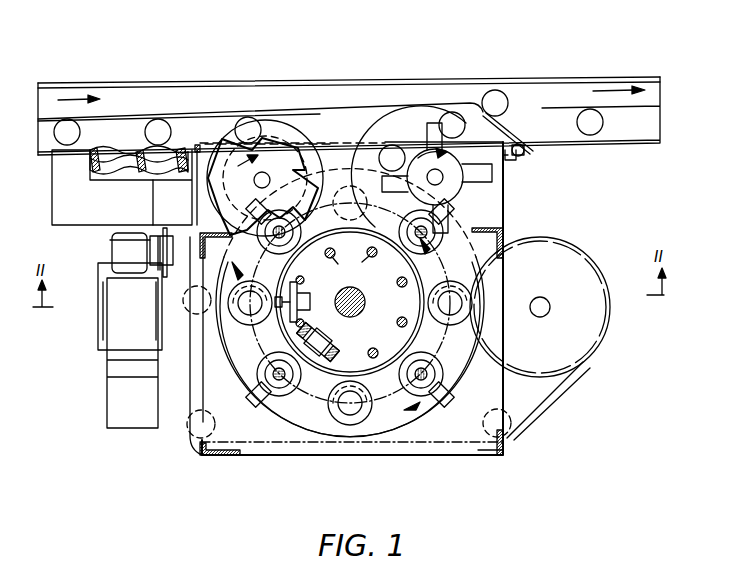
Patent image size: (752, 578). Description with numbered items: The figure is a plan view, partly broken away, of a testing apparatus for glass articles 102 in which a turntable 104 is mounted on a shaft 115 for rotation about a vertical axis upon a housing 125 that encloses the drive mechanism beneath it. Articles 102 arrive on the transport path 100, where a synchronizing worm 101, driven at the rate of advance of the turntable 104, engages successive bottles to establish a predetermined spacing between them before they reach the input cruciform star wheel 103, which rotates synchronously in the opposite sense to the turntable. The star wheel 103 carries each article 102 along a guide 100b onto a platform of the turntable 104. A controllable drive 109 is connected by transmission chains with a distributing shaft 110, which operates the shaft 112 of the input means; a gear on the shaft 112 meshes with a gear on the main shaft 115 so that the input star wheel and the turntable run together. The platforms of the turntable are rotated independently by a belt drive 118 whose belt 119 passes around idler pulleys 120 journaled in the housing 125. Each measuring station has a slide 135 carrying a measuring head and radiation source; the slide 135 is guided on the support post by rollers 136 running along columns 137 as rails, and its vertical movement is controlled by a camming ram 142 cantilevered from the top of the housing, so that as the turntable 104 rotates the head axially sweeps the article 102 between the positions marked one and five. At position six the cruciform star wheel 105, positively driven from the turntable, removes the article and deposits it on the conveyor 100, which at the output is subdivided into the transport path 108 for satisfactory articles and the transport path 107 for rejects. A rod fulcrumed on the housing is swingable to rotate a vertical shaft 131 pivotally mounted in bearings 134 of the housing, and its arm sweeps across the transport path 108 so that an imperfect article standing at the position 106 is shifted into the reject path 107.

The transport path 100 is at (70, 93).
The guide 100b is at (315, 128).
The synchronizing worm 101 is at (107, 150).
The articles 102 is at (252, 130).
The input cruciform star wheel 103 is at (277, 137).
The turntable 104 is at (303, 418).
The cruciform star wheel 105 is at (500, 205).
The position 106 is at (500, 100).
The transport path 107 is at (566, 82).
The transport path 108 is at (635, 128).
The controllable drive 109 is at (104, 362).
The distributing shaft 110 is at (112, 250).
The shaft 112 is at (254, 176).
The shaft 115 is at (360, 293).
The belt drive 118 is at (574, 260).
The belt 119 is at (452, 443).
The idler pulleys 120 is at (196, 305).
The housing 125 is at (506, 452).
The vertical shaft 131 is at (513, 160).
The bearings 134 is at (521, 146).
The slide 135 is at (334, 349).
The rollers 136 is at (310, 330).
The columns 137 is at (366, 258).
The camming ram 142 is at (366, 302).